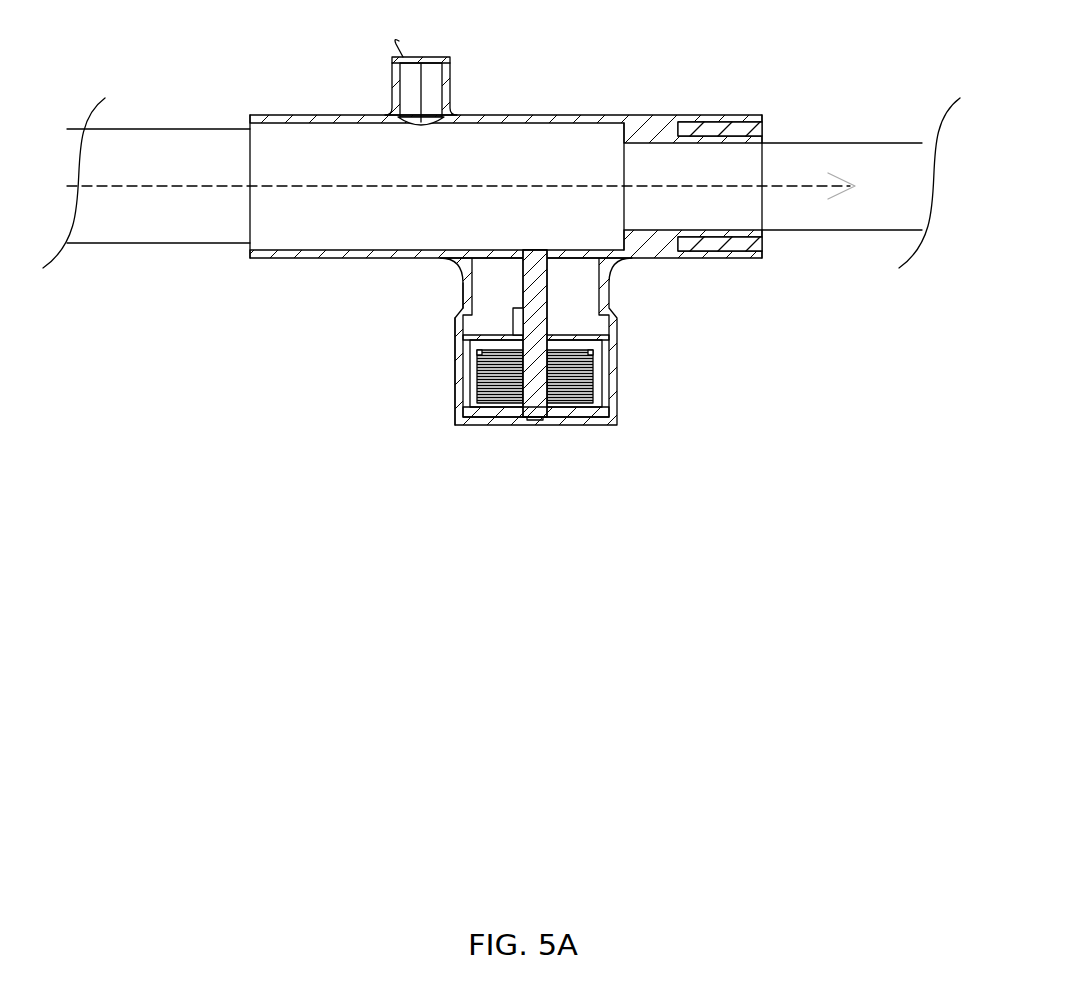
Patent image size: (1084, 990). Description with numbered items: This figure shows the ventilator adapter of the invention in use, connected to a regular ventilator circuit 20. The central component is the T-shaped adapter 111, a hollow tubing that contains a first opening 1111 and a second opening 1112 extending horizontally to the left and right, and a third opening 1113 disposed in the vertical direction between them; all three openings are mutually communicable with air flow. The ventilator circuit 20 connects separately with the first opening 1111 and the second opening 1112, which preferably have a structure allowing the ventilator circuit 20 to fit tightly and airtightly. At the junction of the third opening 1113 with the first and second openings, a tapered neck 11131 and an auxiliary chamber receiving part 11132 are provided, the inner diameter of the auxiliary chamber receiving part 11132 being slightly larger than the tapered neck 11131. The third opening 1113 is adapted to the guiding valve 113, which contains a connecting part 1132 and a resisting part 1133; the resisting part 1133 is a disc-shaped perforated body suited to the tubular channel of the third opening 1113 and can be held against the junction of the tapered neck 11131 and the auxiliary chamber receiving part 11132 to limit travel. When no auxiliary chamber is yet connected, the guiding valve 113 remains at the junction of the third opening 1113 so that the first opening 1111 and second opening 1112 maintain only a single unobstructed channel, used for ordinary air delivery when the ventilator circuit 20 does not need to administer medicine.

The ventilator circuit 20 is at (172, 142).
The T-shaped adapter 111 is at (508, 132).
The first opening 1111 is at (249, 222).
The second opening 1112 is at (762, 210).
The third opening 1113 is at (590, 283).
The tapered neck 11131 is at (463, 285).
The auxiliary chamber receiving part 11132 is at (460, 383).
The guiding valve 113 is at (582, 462).
The connecting part 1132 is at (535, 310).
The resisting part 1133 is at (494, 413).